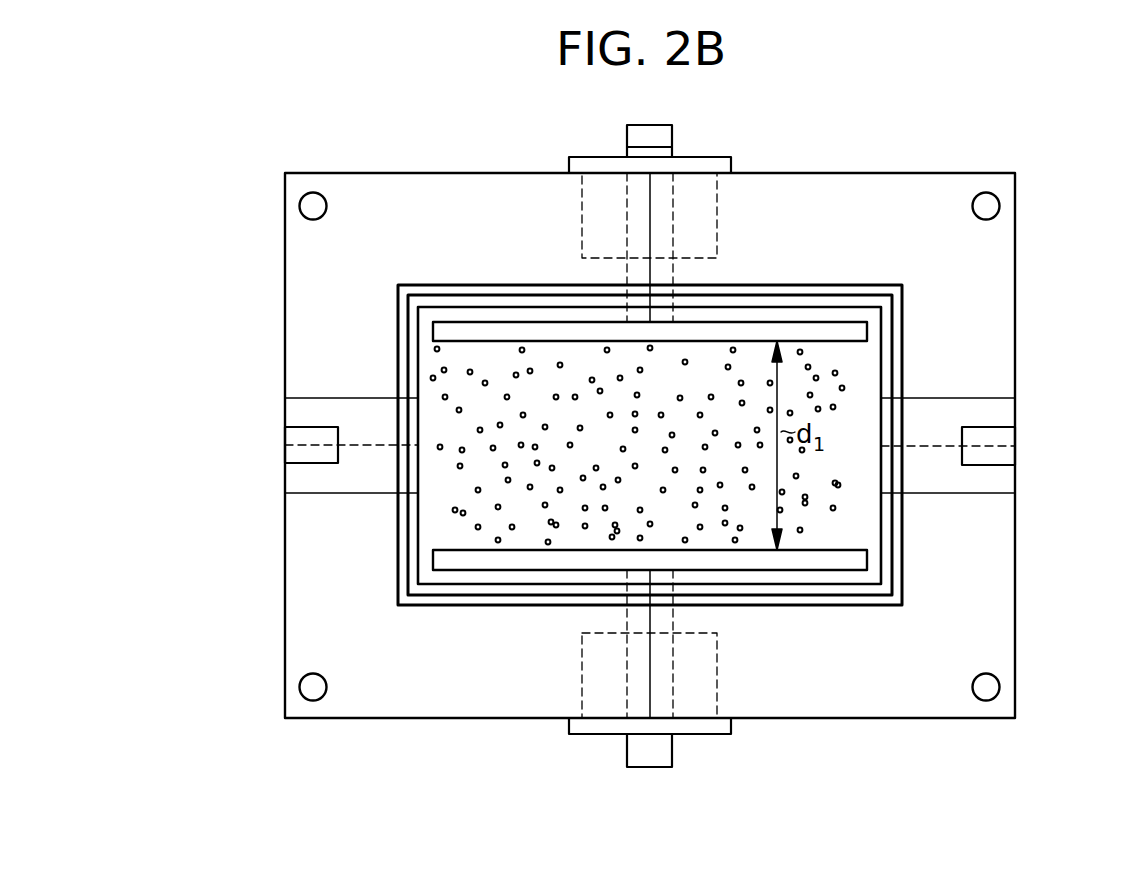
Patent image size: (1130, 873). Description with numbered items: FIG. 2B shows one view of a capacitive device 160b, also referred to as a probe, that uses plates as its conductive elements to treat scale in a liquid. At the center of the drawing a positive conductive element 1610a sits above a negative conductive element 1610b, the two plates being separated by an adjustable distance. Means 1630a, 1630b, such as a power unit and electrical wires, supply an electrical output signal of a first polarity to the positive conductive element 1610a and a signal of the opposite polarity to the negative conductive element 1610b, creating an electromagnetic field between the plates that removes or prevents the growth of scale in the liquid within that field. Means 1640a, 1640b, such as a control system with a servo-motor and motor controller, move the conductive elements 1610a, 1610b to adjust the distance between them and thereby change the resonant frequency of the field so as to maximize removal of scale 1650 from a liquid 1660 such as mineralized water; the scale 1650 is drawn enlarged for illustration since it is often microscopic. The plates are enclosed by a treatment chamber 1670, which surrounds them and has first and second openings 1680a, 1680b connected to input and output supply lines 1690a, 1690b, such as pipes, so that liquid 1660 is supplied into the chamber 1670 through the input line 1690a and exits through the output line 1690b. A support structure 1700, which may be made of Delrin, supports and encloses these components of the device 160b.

The capacitive device 160b is at (373, 734).
The positive conductive element 1610a is at (802, 322).
The negative conductive element 1610b is at (777, 570).
The means for supplying electrical output signal 1630a is at (657, 173).
The means for supplying electrical output signal 1630b is at (650, 718).
The means for moving conductive element 1640a is at (672, 135).
The means for moving conductive element 1640b is at (672, 755).
The scale 1650 is at (573, 398).
The liquid 1660 is at (452, 517).
The treatment chamber 1670 is at (450, 606).
The first opening 1680a is at (415, 469).
The second opening 1680b is at (881, 415).
The input supply line 1690a is at (285, 415).
The output supply line 1690b is at (1015, 427).
The support structure 1700 is at (285, 628).